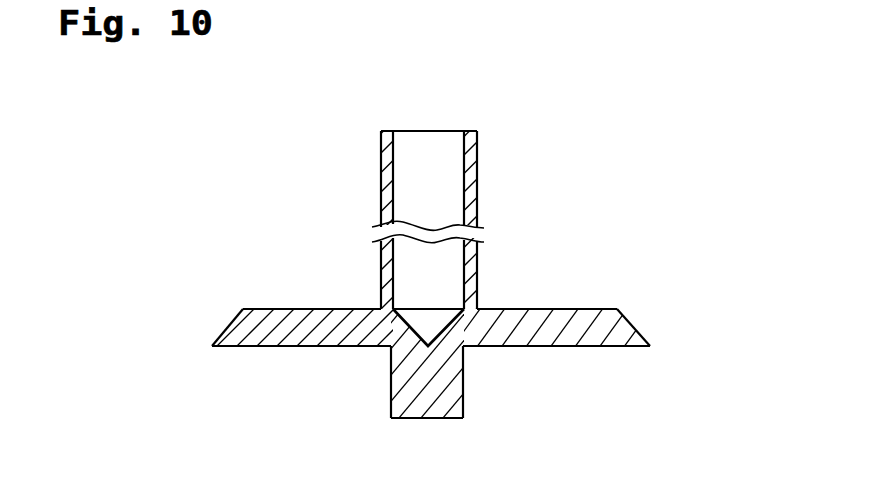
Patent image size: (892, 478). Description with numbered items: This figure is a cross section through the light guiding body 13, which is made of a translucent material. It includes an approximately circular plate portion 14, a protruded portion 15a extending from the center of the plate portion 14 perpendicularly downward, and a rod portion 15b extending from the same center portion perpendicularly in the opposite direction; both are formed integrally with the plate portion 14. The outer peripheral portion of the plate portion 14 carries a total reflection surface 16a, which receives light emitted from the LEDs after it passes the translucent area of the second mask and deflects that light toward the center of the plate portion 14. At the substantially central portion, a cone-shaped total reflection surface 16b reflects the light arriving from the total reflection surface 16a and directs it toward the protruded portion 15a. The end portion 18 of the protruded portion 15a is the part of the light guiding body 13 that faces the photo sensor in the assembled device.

The light guiding body 13 is at (637, 203).
The plate portion 14 is at (300, 312).
The protruded portion 15a is at (448, 390).
The rod portion 15b is at (478, 163).
The total reflection surface 16a is at (636, 333).
The total reflection surface 16b is at (453, 320).
The end portion 18 is at (410, 421).